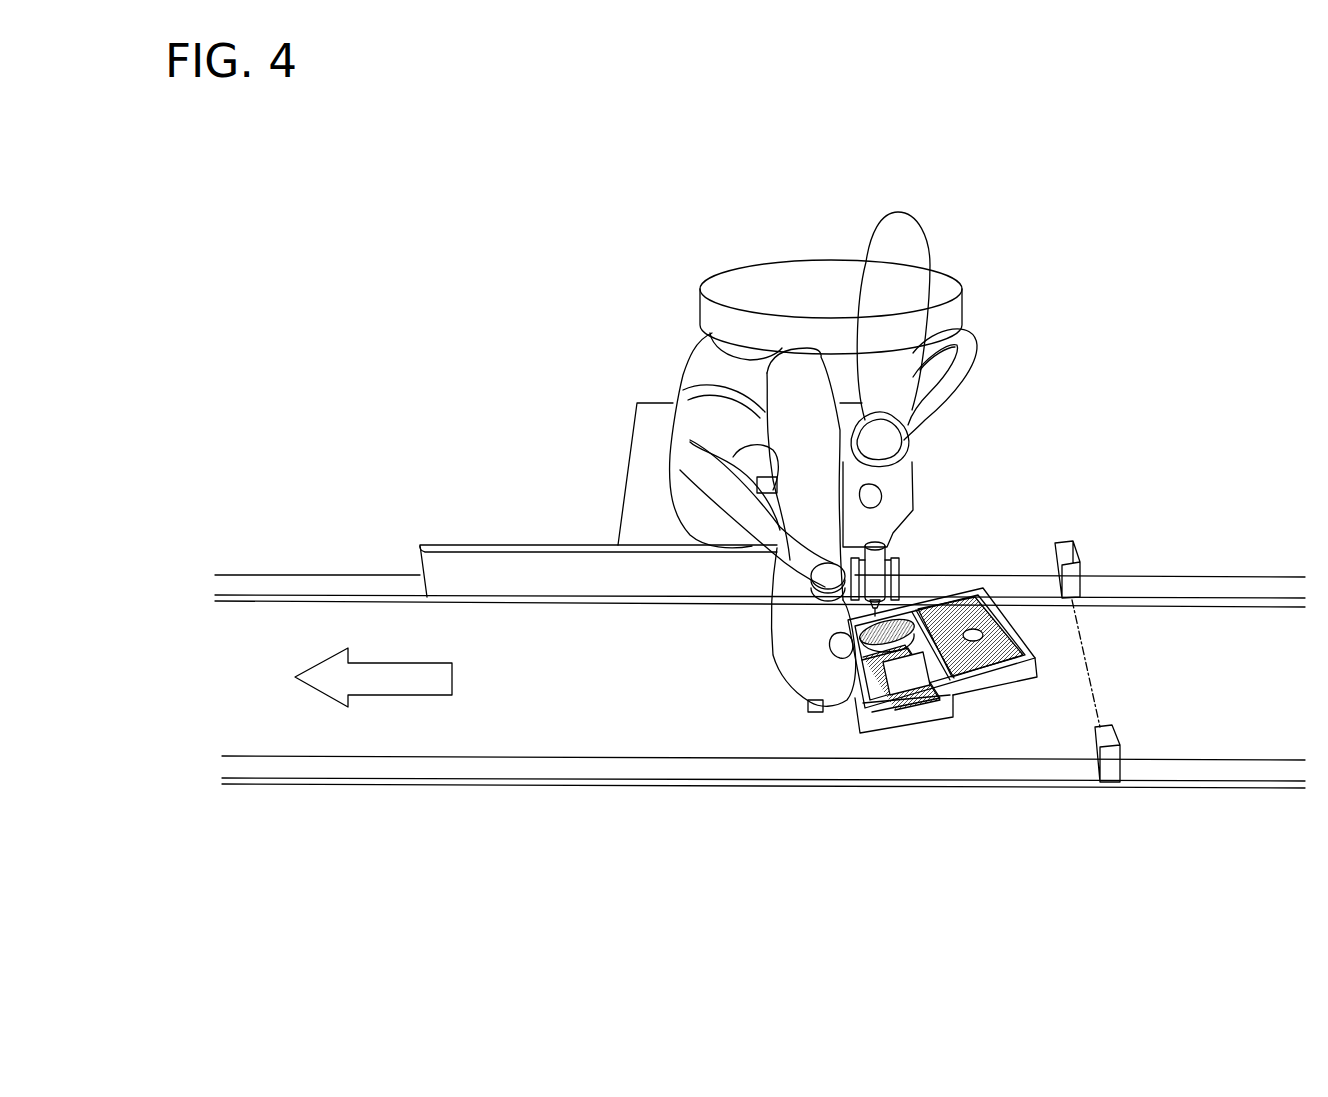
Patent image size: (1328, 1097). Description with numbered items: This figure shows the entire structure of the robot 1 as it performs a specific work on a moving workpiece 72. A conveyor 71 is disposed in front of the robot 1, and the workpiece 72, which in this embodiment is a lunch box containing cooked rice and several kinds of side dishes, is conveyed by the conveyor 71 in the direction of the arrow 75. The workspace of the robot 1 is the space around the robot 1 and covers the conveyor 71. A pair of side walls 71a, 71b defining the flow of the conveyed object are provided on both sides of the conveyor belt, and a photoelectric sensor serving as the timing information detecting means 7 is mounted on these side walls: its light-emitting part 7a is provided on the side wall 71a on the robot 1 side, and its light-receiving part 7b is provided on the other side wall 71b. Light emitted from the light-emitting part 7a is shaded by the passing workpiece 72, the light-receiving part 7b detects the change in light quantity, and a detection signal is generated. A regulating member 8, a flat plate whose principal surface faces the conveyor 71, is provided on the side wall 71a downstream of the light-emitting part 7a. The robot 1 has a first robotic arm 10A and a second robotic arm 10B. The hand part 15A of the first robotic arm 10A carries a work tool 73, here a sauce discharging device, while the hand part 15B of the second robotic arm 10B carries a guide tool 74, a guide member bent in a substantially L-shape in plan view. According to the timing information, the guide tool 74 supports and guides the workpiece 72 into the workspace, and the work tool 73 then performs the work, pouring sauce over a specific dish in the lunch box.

The robot 1 is at (611, 277).
The first robotic arm 10A is at (863, 367).
The second robotic arm 10B is at (700, 521).
The hand part of the first robotic arm 15A is at (904, 546).
The hand part of the second robotic arm 15B is at (783, 707).
The work tool 73 is at (890, 584).
The workpiece 72 is at (1017, 610).
The guide tool 74 is at (895, 718).
The arrow 75 is at (392, 687).
The timing information detecting means 7 is at (1109, 670).
The light-emitting part 7a is at (1077, 563).
The light-receiving part 7b is at (1110, 775).
The conveyor 71 is at (760, 645).
The side wall 71a is at (1193, 577).
The side wall 71b is at (1193, 760).
The regulating member 8 is at (468, 545).